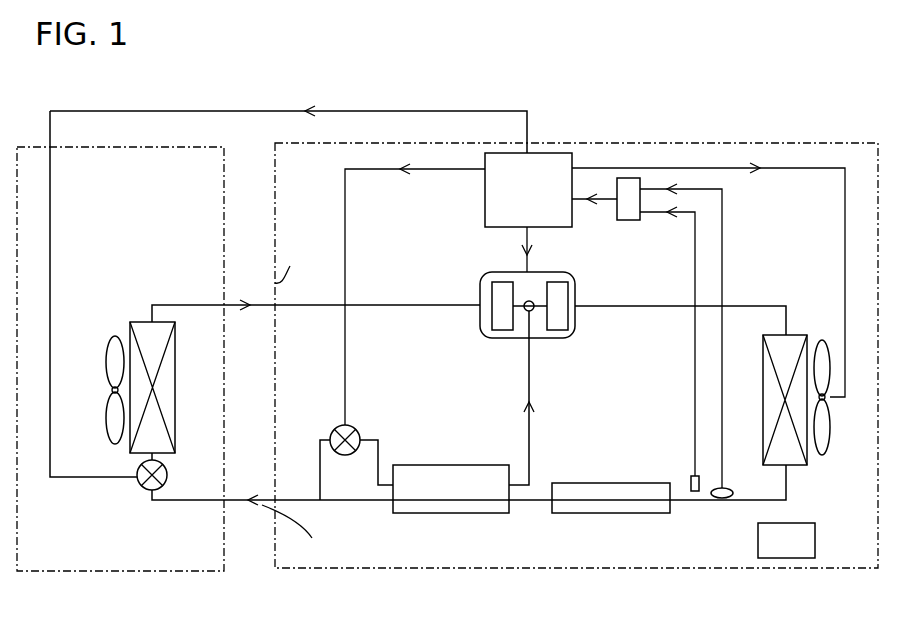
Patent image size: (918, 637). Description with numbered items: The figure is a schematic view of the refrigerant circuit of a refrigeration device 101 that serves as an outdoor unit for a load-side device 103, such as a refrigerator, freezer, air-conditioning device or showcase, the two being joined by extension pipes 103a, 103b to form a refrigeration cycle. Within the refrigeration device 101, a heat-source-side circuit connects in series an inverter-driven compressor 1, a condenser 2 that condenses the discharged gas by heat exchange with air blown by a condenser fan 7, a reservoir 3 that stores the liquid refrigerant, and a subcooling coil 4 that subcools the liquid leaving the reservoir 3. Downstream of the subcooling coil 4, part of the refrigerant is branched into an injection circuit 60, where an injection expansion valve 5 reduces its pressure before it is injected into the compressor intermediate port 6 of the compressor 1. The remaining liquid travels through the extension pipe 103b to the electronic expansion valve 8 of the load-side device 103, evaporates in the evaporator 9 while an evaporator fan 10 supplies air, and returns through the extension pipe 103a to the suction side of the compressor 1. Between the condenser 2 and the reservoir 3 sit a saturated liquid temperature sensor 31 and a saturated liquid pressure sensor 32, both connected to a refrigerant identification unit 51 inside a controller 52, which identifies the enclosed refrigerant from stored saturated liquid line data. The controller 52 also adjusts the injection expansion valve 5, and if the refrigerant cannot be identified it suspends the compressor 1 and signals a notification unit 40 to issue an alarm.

The compressor 1 is at (575, 272).
The condenser 2 is at (781, 335).
The reservoir 3 is at (612, 515).
The subcooling coil 4 is at (437, 515).
The injection expansion valve 5 is at (365, 428).
The compressor intermediate port 6 is at (519, 315).
The condenser fan 7 is at (832, 425).
The electronic expansion valve 8 is at (140, 488).
The evaporator 9 is at (177, 398).
The evaporator fan 10 is at (105, 360).
The saturated liquid temperature sensor 31 is at (727, 490).
The saturated liquid pressure sensor 32 is at (690, 476).
The notification unit 40 is at (810, 523).
The refrigerant identification unit 51 is at (630, 221).
The controller 52 is at (484, 197).
The injection circuit 60 is at (532, 378).
The refrigeration device 101 is at (528, 570).
The load-side device 103 is at (110, 572).
The extension pipe 103a is at (308, 262).
The extension pipe 103b is at (302, 538).